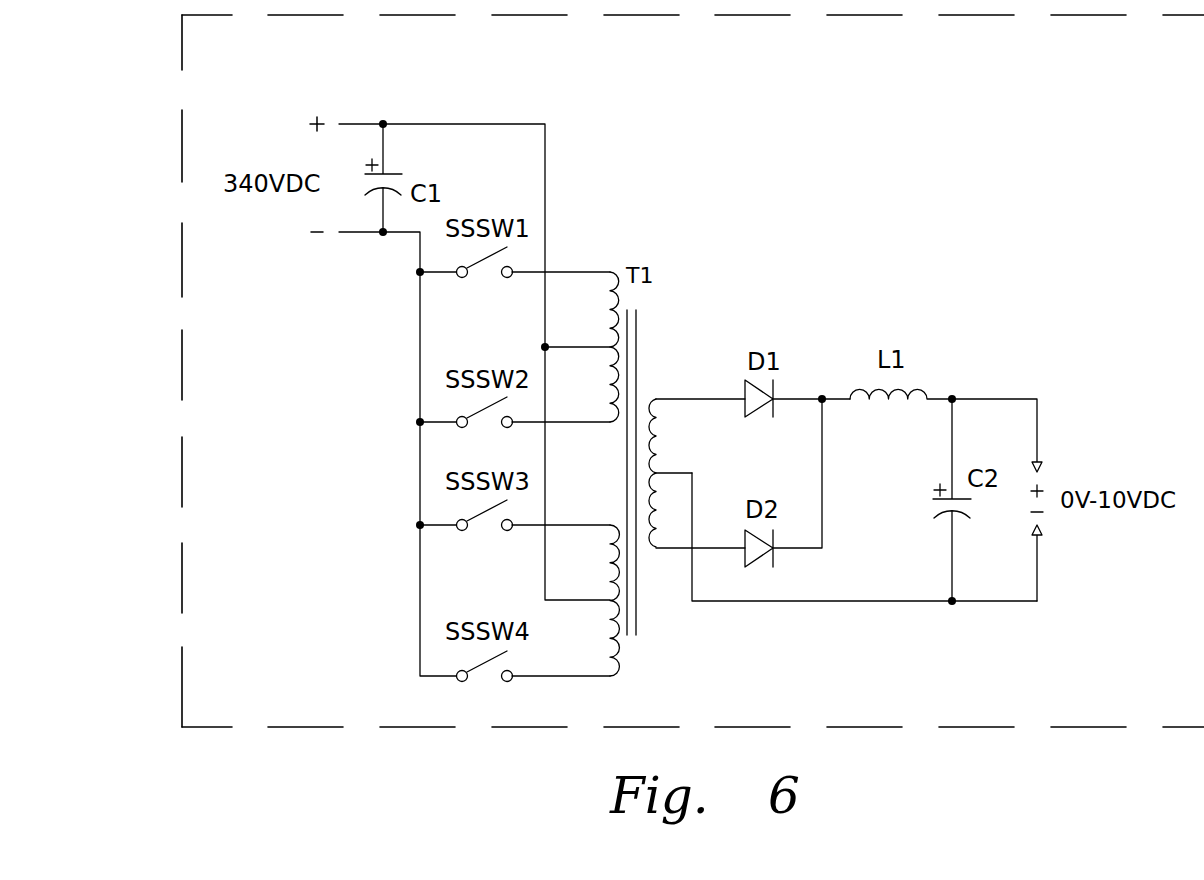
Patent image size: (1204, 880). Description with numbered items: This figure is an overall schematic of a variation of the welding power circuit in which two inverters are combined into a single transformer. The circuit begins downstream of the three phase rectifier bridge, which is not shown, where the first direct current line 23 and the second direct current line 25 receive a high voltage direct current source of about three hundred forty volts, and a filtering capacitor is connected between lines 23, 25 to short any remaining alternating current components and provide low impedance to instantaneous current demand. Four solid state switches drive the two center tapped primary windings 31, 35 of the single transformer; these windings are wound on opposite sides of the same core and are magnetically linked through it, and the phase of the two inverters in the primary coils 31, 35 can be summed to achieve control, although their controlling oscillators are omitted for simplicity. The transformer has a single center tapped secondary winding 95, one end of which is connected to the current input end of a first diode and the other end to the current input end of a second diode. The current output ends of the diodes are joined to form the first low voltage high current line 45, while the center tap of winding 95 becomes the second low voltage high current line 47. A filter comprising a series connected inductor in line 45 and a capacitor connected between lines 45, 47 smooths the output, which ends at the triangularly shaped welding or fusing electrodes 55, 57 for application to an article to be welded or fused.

The first direct current line 23 is at (438, 122).
The second direct current line 25 is at (363, 233).
The center tapped primary winding 31 is at (613, 310).
The center tapped primary winding 35 is at (613, 582).
The center tapped secondary winding 95 is at (660, 457).
The first low voltage high current line 45 is at (838, 398).
The second low voltage high current line 47 is at (862, 603).
The welding or fusing electrode 55 is at (1043, 468).
The welding or fusing electrode 57 is at (1043, 532).